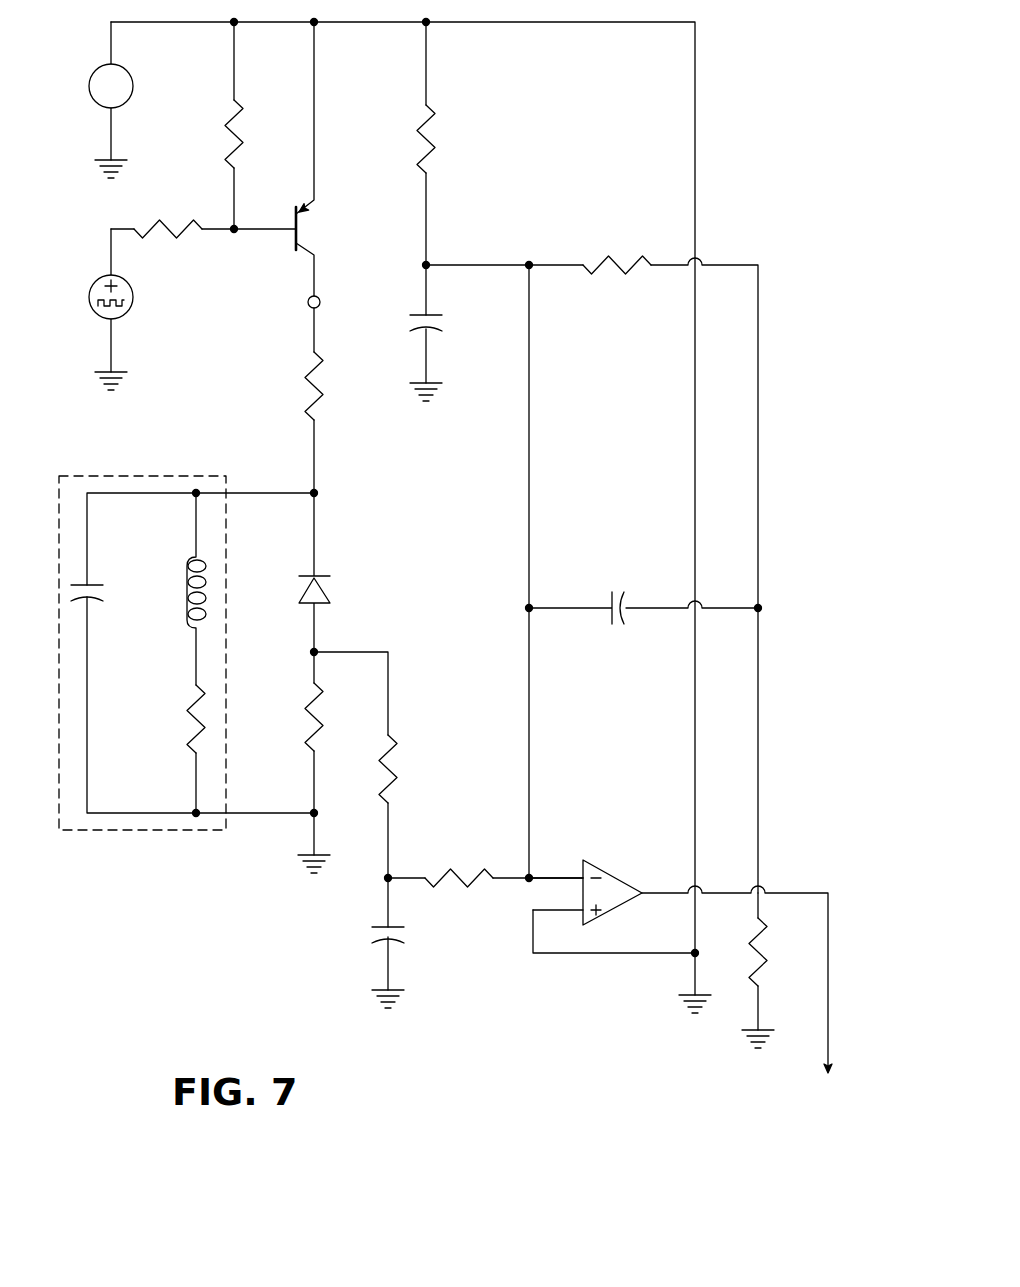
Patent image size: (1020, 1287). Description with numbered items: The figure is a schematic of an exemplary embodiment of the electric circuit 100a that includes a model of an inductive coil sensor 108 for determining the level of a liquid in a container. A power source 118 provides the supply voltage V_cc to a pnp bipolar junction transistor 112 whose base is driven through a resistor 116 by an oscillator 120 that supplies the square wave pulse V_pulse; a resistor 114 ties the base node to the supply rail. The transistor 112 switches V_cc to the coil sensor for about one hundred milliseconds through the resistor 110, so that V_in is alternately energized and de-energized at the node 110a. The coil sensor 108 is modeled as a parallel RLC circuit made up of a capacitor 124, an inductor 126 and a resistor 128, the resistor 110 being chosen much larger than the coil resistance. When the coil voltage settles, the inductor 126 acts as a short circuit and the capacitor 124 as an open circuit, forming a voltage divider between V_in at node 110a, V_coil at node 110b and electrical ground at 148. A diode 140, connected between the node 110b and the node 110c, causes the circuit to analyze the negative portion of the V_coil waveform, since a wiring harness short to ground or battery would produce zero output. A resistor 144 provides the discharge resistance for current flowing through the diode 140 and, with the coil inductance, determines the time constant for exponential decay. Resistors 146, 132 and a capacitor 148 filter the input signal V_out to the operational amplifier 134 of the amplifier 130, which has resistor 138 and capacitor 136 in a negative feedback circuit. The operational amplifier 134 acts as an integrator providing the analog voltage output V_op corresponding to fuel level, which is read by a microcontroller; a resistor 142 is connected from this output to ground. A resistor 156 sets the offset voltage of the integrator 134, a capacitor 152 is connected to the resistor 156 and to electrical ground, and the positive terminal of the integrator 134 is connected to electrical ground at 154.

The circuit 100a is at (770, 190).
The coil sensor 108 is at (170, 832).
The resistor 110 is at (322, 400).
The node 110a is at (306, 313).
The node 110b is at (318, 497).
The node 110c is at (320, 655).
The pnp bipolar junction transistor 112 is at (324, 221).
The resistor 114 is at (232, 118).
The resistor 116 is at (184, 237).
The power source 118 is at (92, 100).
The oscillator 120 is at (93, 311).
The capacitor 124 is at (83, 582).
The inductor 126 is at (190, 556).
The resistor 128 is at (192, 742).
The amplifier 130 is at (640, 1050).
The resistor 132 is at (470, 885).
The operational amplifier 134 is at (608, 875).
The capacitor 136 is at (610, 620).
The resistor 138 is at (625, 268).
The diode 140 is at (326, 592).
The resistor 142 is at (755, 975).
The resistor 144 is at (306, 727).
The resistor 146 is at (395, 762).
The capacitor 148 is at (302, 862).
The capacitor 152 is at (442, 332).
The electrical ground connection 154 is at (605, 956).
The resistor 156 is at (440, 136).